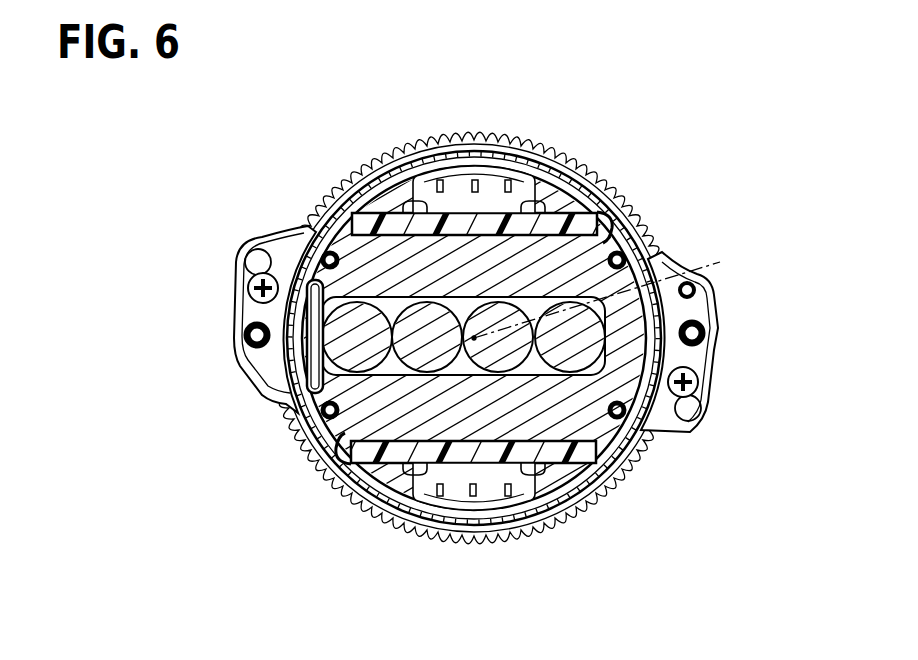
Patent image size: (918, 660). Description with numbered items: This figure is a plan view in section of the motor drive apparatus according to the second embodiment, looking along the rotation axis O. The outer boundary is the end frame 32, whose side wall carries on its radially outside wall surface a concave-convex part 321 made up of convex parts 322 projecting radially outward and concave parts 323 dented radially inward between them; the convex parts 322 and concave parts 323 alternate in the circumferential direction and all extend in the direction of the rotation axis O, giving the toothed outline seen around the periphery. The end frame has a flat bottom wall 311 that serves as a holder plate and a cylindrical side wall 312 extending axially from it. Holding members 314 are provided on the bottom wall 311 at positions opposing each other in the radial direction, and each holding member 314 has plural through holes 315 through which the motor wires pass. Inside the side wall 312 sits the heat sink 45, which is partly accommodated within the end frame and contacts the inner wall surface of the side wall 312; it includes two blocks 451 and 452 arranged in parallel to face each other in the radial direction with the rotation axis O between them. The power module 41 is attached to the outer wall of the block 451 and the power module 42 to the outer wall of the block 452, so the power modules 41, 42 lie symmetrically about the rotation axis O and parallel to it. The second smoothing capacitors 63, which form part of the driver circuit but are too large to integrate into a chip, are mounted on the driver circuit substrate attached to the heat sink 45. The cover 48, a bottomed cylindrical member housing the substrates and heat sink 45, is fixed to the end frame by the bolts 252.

The end frame 32 is at (526, 338).
The concave-convex part 321 is at (526, 338).
The convex parts 322 is at (630, 208).
The concave parts 323 is at (641, 222).
The bottom wall 311 is at (521, 340).
The side wall 312 is at (548, 186).
The holding members 314 is at (472, 340).
The through holes 315 is at (473, 180).
The power module 41 is at (390, 462).
The power module 42 is at (372, 203).
The heat sink 45 is at (476, 349).
The block 451 is at (335, 448).
The block 452 is at (318, 217).
The cover 48 is at (306, 300).
The bolts 252 is at (249, 278).
The second smoothing capacitors 63 is at (307, 423).
The rotation axis O is at (606, 294).